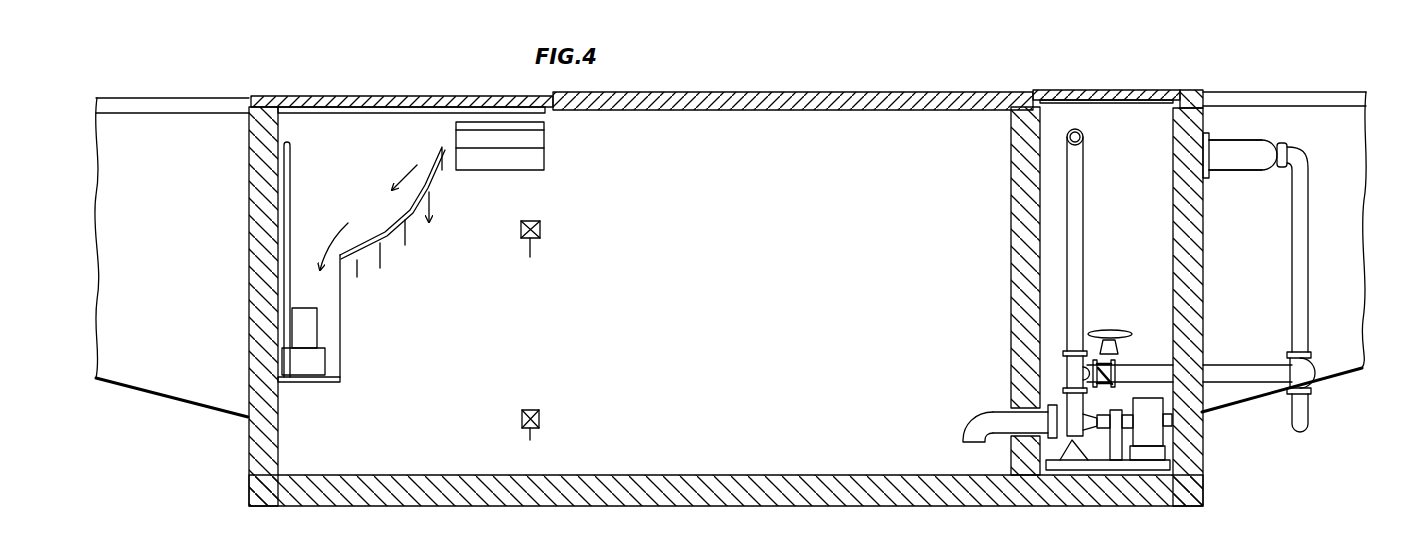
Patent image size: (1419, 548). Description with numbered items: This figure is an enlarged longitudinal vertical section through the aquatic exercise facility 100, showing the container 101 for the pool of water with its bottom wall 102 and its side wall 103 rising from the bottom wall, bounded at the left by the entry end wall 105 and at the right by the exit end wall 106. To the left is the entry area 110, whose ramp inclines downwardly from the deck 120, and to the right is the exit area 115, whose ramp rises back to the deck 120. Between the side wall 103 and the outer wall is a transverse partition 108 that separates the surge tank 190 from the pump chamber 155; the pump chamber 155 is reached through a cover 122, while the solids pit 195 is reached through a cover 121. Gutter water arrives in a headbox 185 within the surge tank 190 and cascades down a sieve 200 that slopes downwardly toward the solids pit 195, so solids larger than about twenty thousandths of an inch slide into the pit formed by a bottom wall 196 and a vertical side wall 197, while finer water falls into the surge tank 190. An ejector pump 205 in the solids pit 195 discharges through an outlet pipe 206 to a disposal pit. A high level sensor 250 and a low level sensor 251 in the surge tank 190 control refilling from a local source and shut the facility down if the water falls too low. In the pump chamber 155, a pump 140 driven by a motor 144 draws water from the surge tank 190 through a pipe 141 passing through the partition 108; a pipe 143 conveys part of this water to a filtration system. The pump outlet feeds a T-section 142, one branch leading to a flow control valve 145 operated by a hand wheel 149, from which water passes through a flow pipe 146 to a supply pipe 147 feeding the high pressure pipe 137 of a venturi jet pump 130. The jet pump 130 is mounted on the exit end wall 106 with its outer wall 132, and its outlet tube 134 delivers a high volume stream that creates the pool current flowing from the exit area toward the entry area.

The aquatic exercise facility 100 is at (1322, 37).
The container 101 is at (248, 451).
The bottom wall 102 is at (449, 480).
The side wall 103 is at (715, 295).
The entry end wall 105 is at (272, 430).
The exit end wall 106 is at (1203, 279).
The transverse partition 108 is at (1010, 274).
The entry area 110 is at (138, 158).
The exit area 115 is at (1340, 145).
The deck 120 is at (687, 92).
The cover 121 is at (383, 96).
The cover 122 is at (1130, 78).
The venturi jet pump 130 is at (1240, 130).
The outer wall 132 is at (1209, 178).
The outlet tube 134 is at (1235, 161).
The high pressure pipe 137 is at (1278, 148).
The pump 140 is at (1072, 400).
The pipe 141 is at (978, 418).
The T-section 142 is at (1065, 367).
The pipe 143 is at (1080, 214).
The motor 144 is at (1155, 421).
The flow control valve 145 is at (1118, 378).
The flow pipe 146 is at (1228, 372).
The supply pipe 147 is at (1302, 273).
The hand wheel 149 is at (1095, 330).
The pump chamber 155 is at (1103, 130).
The headbox 185 is at (545, 141).
The surge tank 190 is at (773, 132).
The solids pit 195 is at (330, 140).
The bottom wall 196 is at (310, 383).
The side wall 197 is at (340, 334).
The sieve 200 is at (368, 222).
The ejector pump 205 is at (305, 325).
The outlet pipe 206 is at (287, 233).
The high level sensor 250 is at (540, 230).
The low level sensor 251 is at (539, 416).